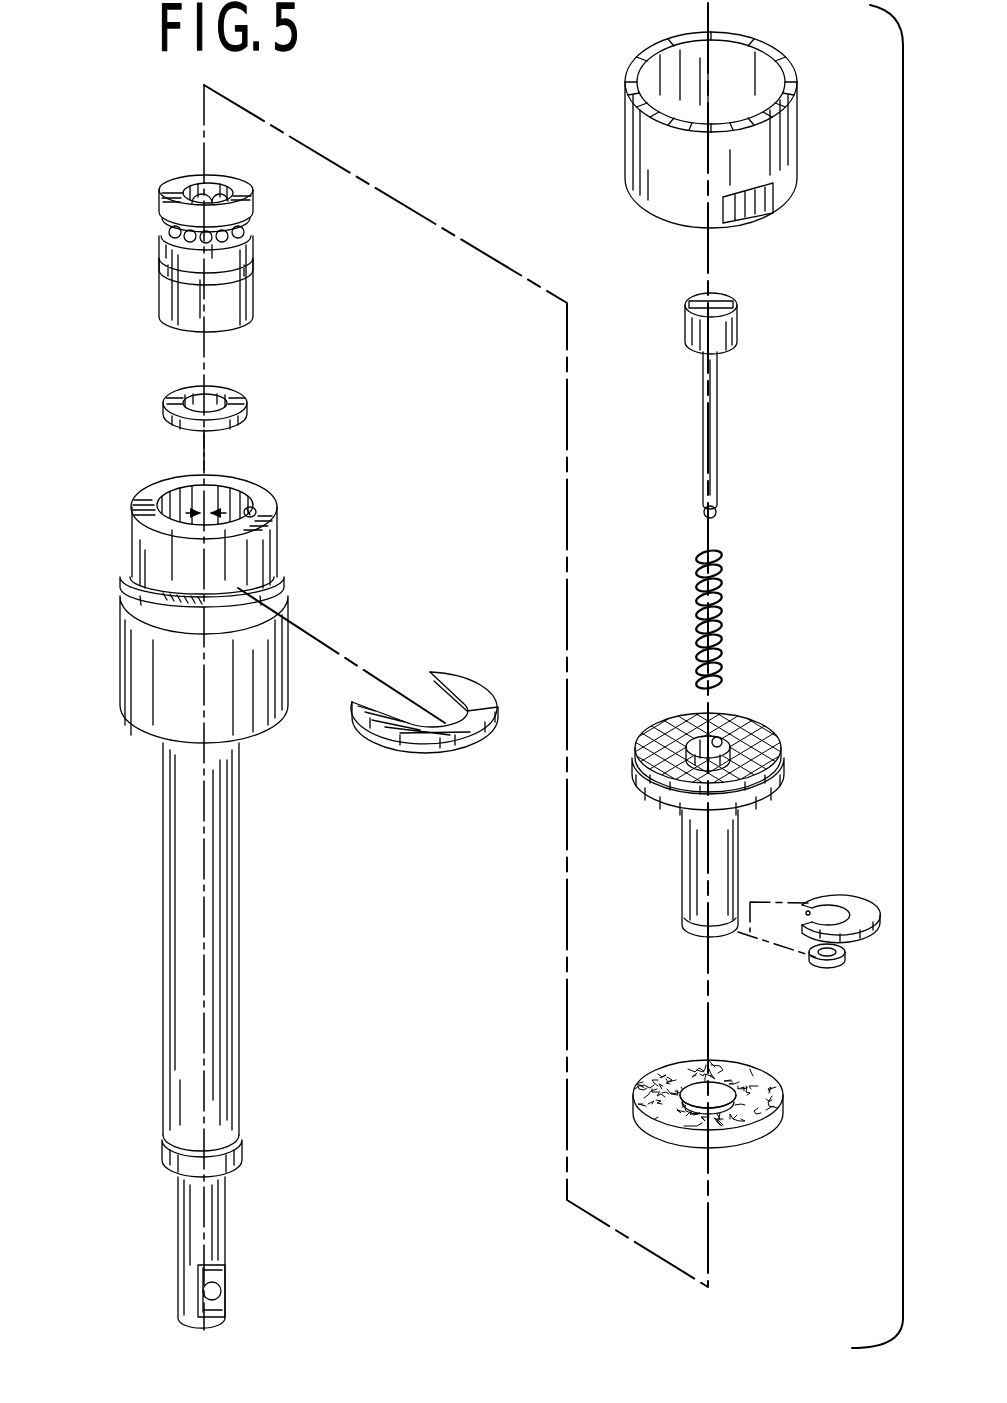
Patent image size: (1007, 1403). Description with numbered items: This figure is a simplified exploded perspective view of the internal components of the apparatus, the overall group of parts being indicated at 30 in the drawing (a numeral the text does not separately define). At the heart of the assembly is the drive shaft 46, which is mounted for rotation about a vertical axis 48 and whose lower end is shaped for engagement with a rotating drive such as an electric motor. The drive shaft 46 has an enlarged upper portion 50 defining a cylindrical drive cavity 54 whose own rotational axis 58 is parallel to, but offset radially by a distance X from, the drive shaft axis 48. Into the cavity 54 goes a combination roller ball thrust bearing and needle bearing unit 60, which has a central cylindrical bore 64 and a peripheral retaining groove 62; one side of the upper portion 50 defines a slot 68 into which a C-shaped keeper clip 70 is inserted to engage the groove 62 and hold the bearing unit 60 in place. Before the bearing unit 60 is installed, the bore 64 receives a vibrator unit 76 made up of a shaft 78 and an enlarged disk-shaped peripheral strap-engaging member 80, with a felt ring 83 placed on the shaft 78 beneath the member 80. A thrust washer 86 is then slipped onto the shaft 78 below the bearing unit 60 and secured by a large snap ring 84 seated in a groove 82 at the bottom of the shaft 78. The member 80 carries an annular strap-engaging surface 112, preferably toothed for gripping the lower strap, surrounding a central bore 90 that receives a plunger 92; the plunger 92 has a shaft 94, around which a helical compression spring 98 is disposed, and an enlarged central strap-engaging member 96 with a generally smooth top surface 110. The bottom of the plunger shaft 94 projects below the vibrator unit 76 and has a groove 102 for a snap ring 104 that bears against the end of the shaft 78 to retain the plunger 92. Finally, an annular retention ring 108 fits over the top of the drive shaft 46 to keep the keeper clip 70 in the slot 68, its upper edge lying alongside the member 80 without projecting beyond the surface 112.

The tool assembly 30 is at (216, 734).
The drive shaft 46 is at (217, 599).
The vertical axis 48 is at (203, 640).
The enlarged upper portion 50 is at (165, 683).
The cavity 54 is at (256, 514).
The rotational axis 58 is at (208, 455).
The combination roller ball thrust bearing and needle bearing unit 60 is at (192, 236).
The peripheral retaining groove 62 is at (215, 274).
The central cylindrical bore 64 is at (204, 197).
The slot 68 is at (140, 602).
The C-shaped keeper clip 70 is at (432, 672).
The vibrator unit 76 is at (697, 892).
The shaft 78 is at (706, 848).
The peripheral strap-engaging member 80 is at (745, 747).
The groove 82 is at (682, 925).
The felt ring 83 is at (745, 1080).
The large snap ring 84 is at (822, 900).
The thrust washer 86 is at (243, 400).
The central bore 90 is at (714, 742).
The plunger 92 is at (751, 390).
The plunger shaft 94 is at (712, 440).
The central strap-engaging member 96 is at (751, 308).
The helical compression spring 98 is at (718, 557).
The groove 102 is at (718, 508).
The snap ring 104 is at (812, 962).
The annular retention ring 108 is at (650, 157).
The top surface 110 is at (720, 300).
The annular strap-engaging surface 112 is at (760, 730).
The distance X is at (226, 513).